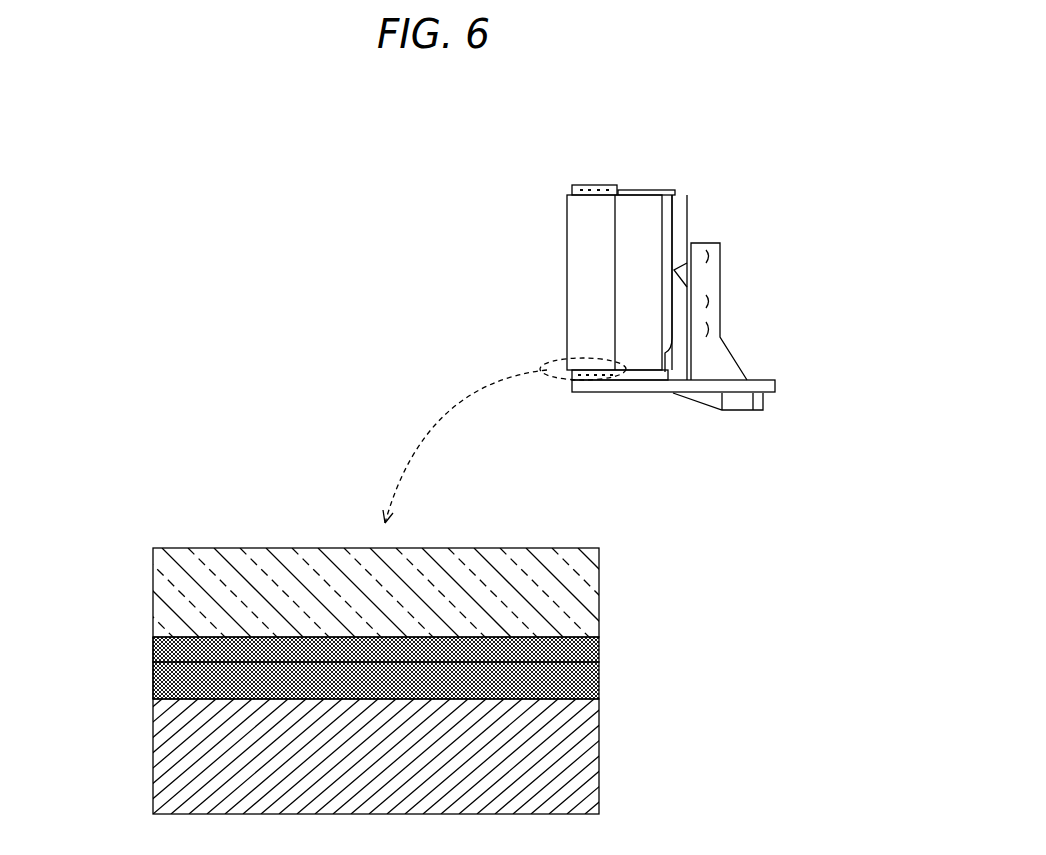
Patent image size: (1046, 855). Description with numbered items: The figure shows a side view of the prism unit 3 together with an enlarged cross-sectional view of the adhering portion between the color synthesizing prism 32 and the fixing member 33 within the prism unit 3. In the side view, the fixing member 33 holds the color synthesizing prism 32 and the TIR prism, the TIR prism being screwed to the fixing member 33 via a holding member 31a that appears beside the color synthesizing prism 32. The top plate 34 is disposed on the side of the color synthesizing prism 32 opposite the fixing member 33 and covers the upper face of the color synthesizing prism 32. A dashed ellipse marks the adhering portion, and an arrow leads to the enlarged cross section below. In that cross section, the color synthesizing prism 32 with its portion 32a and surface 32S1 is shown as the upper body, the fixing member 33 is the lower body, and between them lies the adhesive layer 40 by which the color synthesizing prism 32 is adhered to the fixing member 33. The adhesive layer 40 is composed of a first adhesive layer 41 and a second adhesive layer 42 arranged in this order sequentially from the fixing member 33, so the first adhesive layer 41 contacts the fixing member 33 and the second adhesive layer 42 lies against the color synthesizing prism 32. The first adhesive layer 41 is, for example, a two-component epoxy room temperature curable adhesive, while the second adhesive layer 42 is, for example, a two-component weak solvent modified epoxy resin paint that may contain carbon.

The prism unit 3 is at (758, 157).
The top plate 34 is at (596, 185).
The color synthesizing prism 32 is at (580, 297).
The board surface portion 32a is at (372, 413).
The holding member 31a is at (718, 352).
The fixing member 33 is at (602, 392).
The adhesive layer 40 is at (667, 640).
The first adhesive layer 41 is at (598, 684).
The second adhesive layer 42 is at (598, 650).
The board mounting surface 32S1 is at (153, 647).